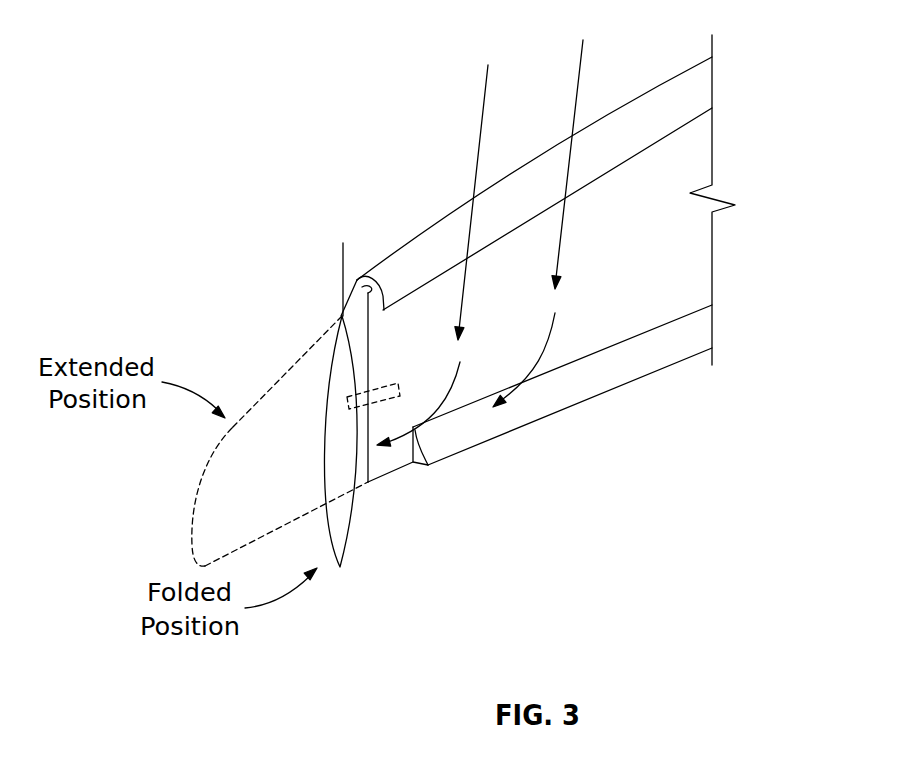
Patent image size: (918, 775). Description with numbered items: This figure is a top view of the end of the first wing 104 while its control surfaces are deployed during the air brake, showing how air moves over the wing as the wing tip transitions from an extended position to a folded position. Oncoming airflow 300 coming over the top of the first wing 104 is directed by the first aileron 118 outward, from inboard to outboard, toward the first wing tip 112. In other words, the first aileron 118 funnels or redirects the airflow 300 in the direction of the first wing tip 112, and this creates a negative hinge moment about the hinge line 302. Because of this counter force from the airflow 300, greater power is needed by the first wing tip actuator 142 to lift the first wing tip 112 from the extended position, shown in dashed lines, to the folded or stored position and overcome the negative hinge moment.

The first wing 104 is at (678, 178).
The first aileron 118 is at (655, 352).
The first wing tip 112 is at (343, 523).
The first wing tip actuator 142 is at (370, 374).
The hinge line 302 is at (343, 262).
The airflow 300 is at (488, 90).